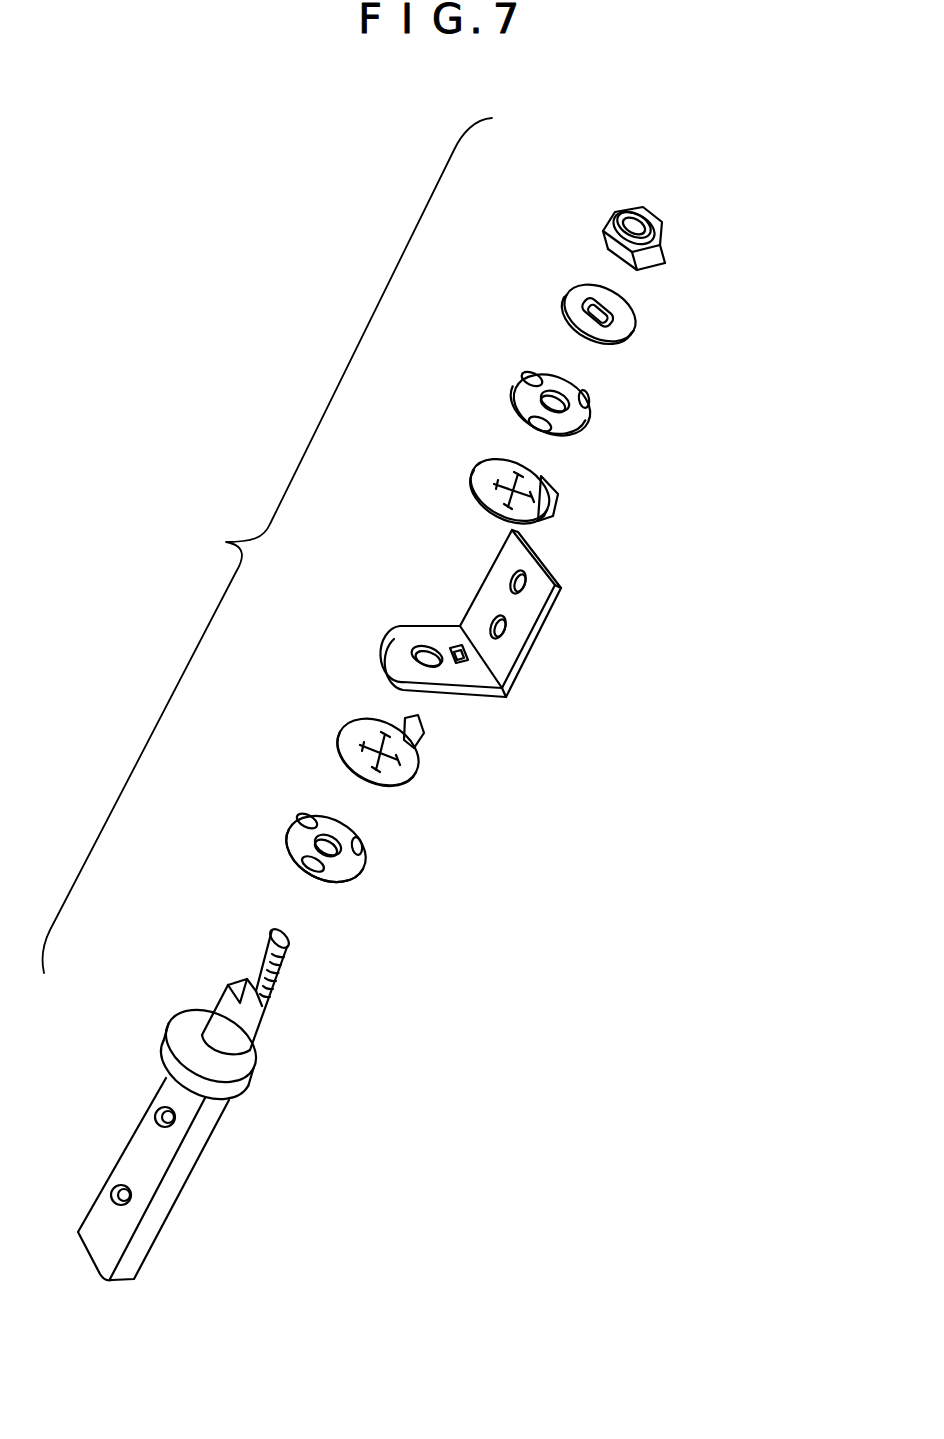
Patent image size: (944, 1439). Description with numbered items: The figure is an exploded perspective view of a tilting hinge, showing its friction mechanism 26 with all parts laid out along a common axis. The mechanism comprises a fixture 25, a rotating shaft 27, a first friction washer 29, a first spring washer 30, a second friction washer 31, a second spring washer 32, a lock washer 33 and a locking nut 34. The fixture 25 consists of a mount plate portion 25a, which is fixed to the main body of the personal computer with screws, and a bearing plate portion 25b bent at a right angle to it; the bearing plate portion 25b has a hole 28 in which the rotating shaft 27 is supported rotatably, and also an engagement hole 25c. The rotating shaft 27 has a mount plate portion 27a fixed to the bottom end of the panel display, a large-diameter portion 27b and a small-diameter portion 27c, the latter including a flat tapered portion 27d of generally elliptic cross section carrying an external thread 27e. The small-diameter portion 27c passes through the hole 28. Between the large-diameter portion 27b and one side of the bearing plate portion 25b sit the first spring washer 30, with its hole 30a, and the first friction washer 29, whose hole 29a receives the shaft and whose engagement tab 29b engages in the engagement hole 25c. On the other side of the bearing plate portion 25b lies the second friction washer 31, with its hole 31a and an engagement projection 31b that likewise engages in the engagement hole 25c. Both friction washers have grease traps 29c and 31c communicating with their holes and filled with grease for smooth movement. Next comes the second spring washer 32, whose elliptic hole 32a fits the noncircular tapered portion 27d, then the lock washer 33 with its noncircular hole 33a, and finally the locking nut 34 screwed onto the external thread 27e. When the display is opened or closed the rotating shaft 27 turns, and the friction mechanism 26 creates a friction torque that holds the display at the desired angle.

The fixture 25 is at (442, 666).
The mount plate portion 25a is at (527, 615).
The bearing plate portion 25b is at (392, 608).
The engagement hole 25c is at (455, 647).
The friction mechanism 26 is at (219, 521).
The rotating shaft 27 is at (214, 1100).
The mount plate portion 27a is at (158, 1217).
The large-diameter portion 27b is at (230, 1085).
The small-diameter portion 27c is at (220, 990).
The tapered portion 27d is at (258, 1002).
The external thread 27e is at (286, 947).
The hole 28 is at (418, 645).
The first friction washer 29 is at (376, 752).
The hole 29a is at (357, 727).
The engagement tab 29b is at (424, 736).
The grease traps 29c is at (385, 742).
The first spring washer 30 is at (314, 856).
The hole 30a is at (352, 873).
The second friction washer 31 is at (514, 501).
The hole 31a is at (512, 473).
The engagement projection 31b is at (557, 520).
The grease traps 31c is at (522, 492).
The second spring washer 32 is at (568, 380).
The hole 32a is at (582, 410).
The lock washer 33 is at (596, 296).
The noncircular hole 33a is at (626, 313).
The locking nut 34 is at (608, 222).